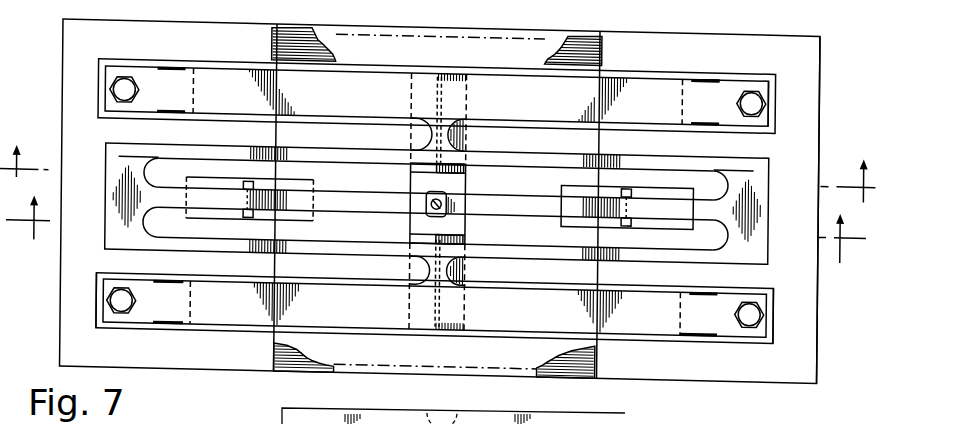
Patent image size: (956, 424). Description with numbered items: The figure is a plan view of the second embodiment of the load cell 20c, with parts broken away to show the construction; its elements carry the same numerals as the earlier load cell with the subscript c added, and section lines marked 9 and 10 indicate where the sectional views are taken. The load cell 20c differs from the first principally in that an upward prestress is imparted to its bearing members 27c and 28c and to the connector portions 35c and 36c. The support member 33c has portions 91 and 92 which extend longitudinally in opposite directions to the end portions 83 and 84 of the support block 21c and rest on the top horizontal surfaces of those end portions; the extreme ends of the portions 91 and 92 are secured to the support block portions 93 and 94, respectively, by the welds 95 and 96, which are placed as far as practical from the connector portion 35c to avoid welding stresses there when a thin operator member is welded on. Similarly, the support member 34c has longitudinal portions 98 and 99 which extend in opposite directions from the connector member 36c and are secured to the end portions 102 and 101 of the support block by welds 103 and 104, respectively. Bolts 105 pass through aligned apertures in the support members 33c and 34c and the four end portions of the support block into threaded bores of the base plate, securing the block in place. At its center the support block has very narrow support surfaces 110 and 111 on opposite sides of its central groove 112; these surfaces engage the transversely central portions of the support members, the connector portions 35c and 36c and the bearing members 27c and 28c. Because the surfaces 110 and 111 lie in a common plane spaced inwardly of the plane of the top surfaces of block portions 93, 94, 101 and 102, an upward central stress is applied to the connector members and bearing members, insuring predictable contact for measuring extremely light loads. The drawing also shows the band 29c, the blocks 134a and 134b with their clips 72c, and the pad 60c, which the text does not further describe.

The load cell 20c is at (438, 212).
The end portion of support block 84 is at (72, 61).
The end portion of support block 83 is at (801, 126).
The longitudinal portion of support member 91 is at (628, 84).
The longitudinal portion of support member 92 is at (222, 69).
The support block portion 93 is at (749, 64).
The support block portion 94 is at (123, 62).
The weld 95 is at (698, 63).
The weld 96 is at (173, 60).
The bolt 105 is at (753, 89).
The support block 21c is at (270, 57).
The support member 33c is at (338, 86).
The connector portion 35c is at (453, 116).
The connector portion 36c is at (408, 272).
The bearing member 28c is at (524, 242).
The bearing member 27c is at (676, 142).
The center band 29c is at (535, 196).
The insulating block 134a is at (314, 177).
The insulating block 134b is at (664, 178).
The clip 72c is at (250, 216).
The central support surface 110 is at (468, 164).
The central support surface 111 is at (470, 229).
The central groove 112 is at (420, 214).
The longitudinal portion of support member 99 is at (233, 308).
The end portion of support block 101 is at (105, 267).
The end portion of support block 102 is at (766, 272).
The weld 103 is at (703, 272).
The weld 104 is at (166, 274).
The longitudinal portion of support member 98 is at (680, 329).
The contact pad 60c is at (295, 367).
The support member 34c is at (653, 316).
The section line 9- 9 is at (435, 243).
The section line 10- 10 is at (438, 187).